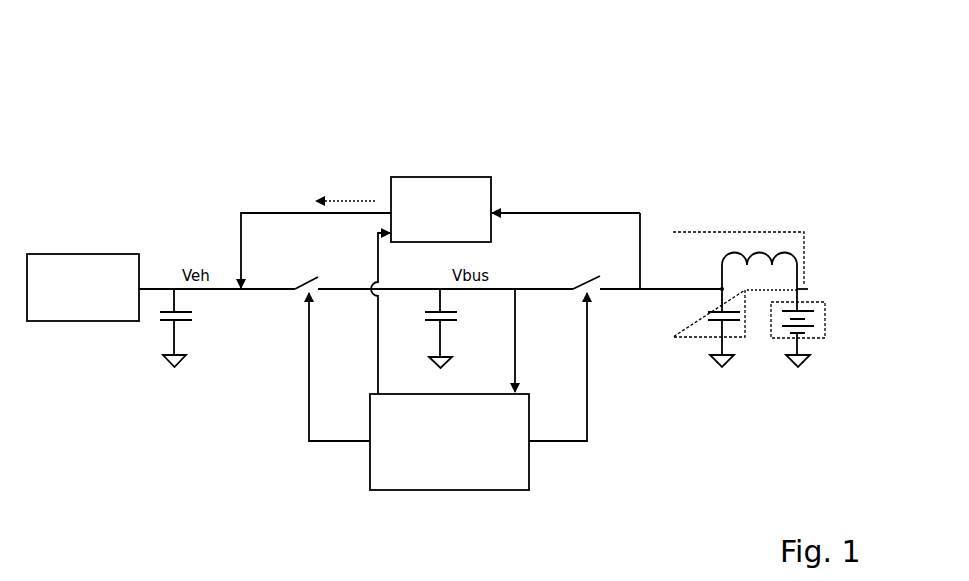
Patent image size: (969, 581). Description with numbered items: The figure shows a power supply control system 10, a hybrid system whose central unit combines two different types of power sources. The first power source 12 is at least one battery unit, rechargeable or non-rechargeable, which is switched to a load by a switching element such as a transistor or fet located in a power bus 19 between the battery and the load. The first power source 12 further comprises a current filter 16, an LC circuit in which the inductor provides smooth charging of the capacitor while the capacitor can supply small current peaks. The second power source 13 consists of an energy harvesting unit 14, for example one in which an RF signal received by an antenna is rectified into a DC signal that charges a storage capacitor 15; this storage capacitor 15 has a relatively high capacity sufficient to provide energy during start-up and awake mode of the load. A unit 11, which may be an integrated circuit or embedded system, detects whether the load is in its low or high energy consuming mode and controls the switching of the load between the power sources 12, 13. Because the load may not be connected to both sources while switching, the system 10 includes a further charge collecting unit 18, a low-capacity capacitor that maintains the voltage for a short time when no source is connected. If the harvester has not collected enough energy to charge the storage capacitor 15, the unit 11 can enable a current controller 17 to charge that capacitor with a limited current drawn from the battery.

The power supply control system 10 is at (116, 111).
The unit 11 is at (477, 487).
The first power source 12 is at (833, 216).
The second power source 13 is at (82, 343).
The energy harvesting unit 14 is at (120, 251).
The storage capacitor 15 is at (172, 333).
The current filter 16 is at (692, 230).
The current controller 17 is at (433, 176).
The charge collecting unit 18 is at (440, 333).
The power bus 19 is at (620, 290).